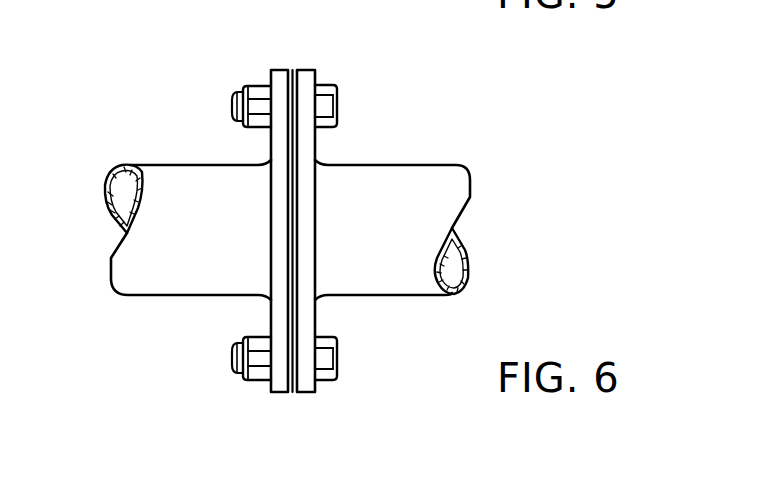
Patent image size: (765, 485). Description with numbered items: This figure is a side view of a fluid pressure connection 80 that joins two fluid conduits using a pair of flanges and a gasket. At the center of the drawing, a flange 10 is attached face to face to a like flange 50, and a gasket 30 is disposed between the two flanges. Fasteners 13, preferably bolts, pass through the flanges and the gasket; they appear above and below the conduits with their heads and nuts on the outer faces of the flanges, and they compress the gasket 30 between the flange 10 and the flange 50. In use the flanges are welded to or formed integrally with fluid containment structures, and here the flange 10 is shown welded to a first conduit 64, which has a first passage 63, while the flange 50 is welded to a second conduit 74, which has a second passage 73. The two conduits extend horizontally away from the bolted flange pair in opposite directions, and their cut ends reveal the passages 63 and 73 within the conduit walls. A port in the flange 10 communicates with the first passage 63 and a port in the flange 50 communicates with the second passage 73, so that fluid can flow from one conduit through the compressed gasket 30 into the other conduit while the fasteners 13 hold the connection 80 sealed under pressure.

The flange 10 is at (278, 90).
The fasteners 13 is at (339, 358).
The gasket 30 is at (293, 68).
The like flange 50 is at (312, 78).
The first passage 63 is at (128, 200).
The first conduit 64 is at (180, 173).
The second passage 73 is at (451, 263).
The second conduit 74 is at (387, 178).
The fluid pressure connection 80 is at (164, 312).